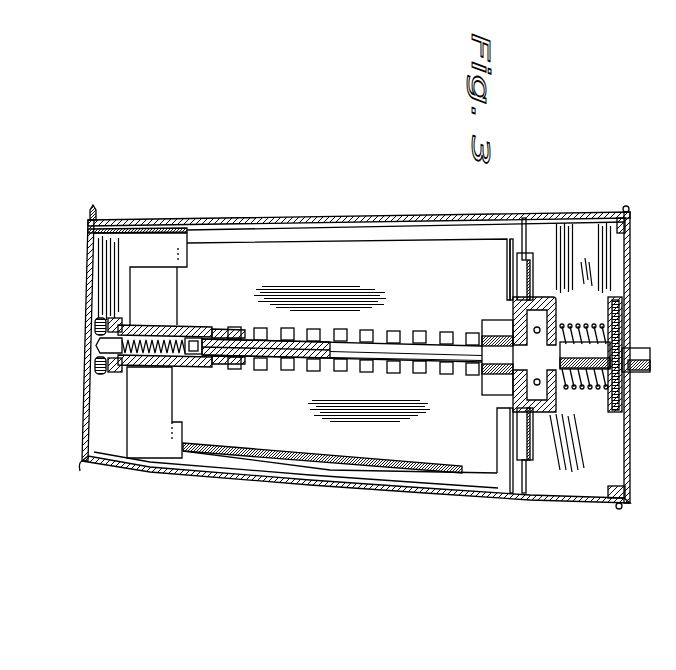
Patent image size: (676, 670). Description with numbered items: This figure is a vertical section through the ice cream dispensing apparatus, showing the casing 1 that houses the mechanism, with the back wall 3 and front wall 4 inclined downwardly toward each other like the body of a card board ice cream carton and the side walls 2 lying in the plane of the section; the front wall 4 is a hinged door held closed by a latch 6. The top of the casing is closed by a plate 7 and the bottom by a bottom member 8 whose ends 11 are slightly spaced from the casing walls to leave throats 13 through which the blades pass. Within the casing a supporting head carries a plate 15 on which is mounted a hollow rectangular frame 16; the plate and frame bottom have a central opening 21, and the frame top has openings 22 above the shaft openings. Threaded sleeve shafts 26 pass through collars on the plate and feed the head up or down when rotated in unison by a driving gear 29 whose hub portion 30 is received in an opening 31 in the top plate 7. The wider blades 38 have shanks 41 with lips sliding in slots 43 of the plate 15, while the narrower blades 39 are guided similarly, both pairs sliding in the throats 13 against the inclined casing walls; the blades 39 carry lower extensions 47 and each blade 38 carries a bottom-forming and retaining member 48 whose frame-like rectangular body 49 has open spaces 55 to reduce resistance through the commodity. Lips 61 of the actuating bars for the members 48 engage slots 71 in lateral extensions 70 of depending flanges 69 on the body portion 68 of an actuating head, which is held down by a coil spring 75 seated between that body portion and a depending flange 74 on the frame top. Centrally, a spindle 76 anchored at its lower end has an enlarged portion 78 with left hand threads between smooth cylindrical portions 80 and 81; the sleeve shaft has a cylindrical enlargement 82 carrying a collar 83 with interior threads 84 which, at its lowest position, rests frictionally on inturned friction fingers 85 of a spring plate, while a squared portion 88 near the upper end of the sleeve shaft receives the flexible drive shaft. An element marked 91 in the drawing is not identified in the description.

The casing 1 is at (378, 528).
The side walls 2 is at (293, 495).
The back wall 3 is at (251, 218).
The front wall 4 is at (247, 500).
The latch 6 is at (88, 388).
The plate 7 is at (646, 482).
The bottom member 8 is at (84, 418).
The ends 11 is at (116, 500).
The throats 13 is at (68, 480).
The plate 15 is at (483, 420).
The hollow rectangular frame 16 is at (581, 316).
The opening 21 is at (481, 384).
The openings 22 is at (358, 419).
The threaded sleeve shafts 26 is at (387, 389).
The driving gear 29 is at (643, 442).
The hub portion 30 is at (648, 324).
The opening 31 is at (95, 365).
The blades 38 is at (420, 538).
The blades 39 is at (335, 533).
The shank 41 is at (548, 287).
The slot 43 is at (520, 284).
The extension 47 is at (516, 244).
The bottom-forming and retaining member 48 is at (160, 505).
The rectangular body 49 is at (536, 525).
The open spaces 55 is at (197, 497).
The lips 61 is at (538, 465).
The body portion 68 is at (638, 392).
The depending flanges 69 is at (536, 433).
The lateral extensions 70 is at (152, 384).
The slots 71 is at (95, 345).
The depending flange 74 is at (485, 337).
The coil spring 75 is at (574, 420).
The spindle 76 is at (295, 392).
The enlarged portion 78 is at (165, 377).
The smooth cylindrical portion 80 is at (133, 374).
The smooth cylindrical portion 81 is at (594, 435).
The cylindrical enlargement 82 is at (198, 326).
The collar 83 is at (122, 320).
The threads 84 is at (96, 328).
The friction fingers 85 is at (108, 422).
The squared portion 88 is at (660, 392).
The bushing 91 is at (222, 387).